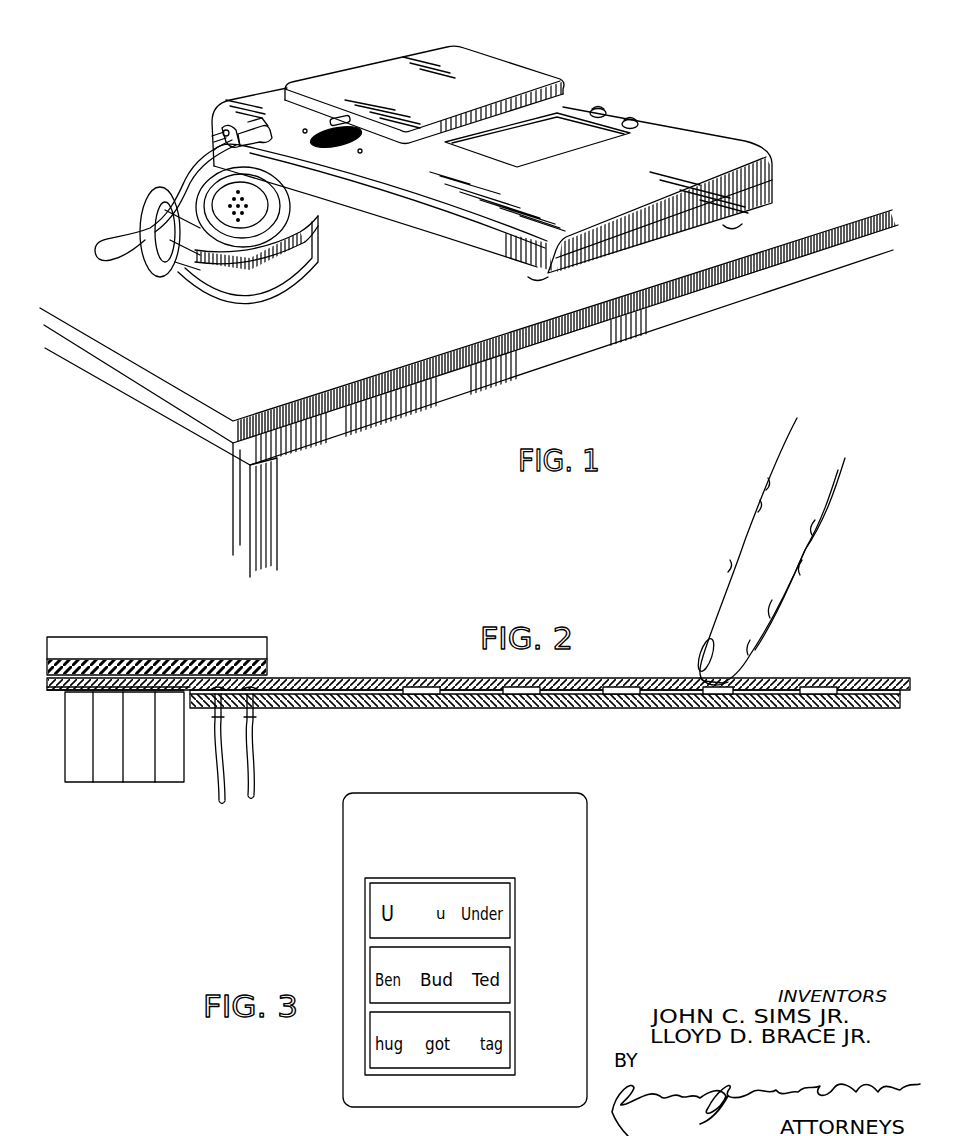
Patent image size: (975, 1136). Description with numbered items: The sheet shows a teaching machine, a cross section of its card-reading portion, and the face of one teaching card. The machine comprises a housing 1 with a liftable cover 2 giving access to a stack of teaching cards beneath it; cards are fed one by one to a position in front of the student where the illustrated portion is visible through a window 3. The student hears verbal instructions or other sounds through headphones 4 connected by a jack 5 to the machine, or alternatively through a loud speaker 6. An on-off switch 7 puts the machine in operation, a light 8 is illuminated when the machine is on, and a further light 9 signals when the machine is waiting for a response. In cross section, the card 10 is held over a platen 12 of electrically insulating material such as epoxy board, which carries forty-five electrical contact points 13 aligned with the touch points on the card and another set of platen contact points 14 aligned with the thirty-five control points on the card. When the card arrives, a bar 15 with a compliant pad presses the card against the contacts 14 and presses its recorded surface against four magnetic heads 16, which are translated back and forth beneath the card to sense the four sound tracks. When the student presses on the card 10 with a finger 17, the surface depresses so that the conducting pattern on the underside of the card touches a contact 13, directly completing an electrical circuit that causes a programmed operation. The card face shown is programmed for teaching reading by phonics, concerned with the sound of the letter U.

In FIG. 1, the housing 1 is at (720, 136).
In FIG. 1, the liftable cover 2 is at (378, 72).
In FIG. 1, the window 3 is at (612, 142).
In FIG. 1, the headphones 4 is at (330, 263).
In FIG. 1, the jack 5 is at (276, 142).
In FIG. 1, the loud speaker 6 is at (317, 127).
In FIG. 1, the on-off switch 7 is at (228, 130).
In FIG. 1, the light 8 is at (601, 108).
In FIG. 1, the further light 9 is at (634, 119).
In FIG. 2, the card 10 is at (818, 677).
In FIG. 2, the platen 12 is at (850, 702).
In FIG. 2, the electrical contact points 13 is at (613, 698).
In FIG. 2, the platen contact points 14 is at (268, 686).
In FIG. 2, the bar 15 is at (172, 652).
In FIG. 2, the magnetic heads 16 is at (108, 770).
In FIG. 2, the finger 17 is at (802, 563).